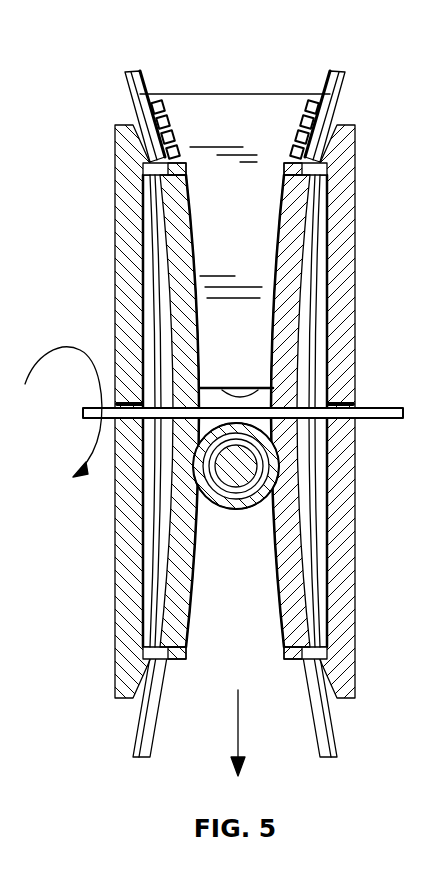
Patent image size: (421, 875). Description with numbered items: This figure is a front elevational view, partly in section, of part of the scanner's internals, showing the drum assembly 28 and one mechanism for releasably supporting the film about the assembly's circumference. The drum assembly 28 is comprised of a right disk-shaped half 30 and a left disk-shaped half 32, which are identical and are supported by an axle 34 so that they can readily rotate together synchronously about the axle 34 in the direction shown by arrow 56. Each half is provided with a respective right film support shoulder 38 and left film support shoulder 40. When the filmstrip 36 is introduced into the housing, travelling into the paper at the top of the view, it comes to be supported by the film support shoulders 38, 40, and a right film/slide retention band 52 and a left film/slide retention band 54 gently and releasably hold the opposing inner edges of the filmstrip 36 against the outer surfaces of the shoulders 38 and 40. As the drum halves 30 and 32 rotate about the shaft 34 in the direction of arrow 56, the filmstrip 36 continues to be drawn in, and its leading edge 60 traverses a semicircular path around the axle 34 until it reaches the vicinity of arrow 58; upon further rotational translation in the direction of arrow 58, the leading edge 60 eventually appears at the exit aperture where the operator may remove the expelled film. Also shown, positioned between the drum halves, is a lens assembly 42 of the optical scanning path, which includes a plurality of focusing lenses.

The drum assembly 28 is at (337, 399).
The right disk-shaped half 30 is at (348, 155).
The left disk-shaped half 32 is at (120, 152).
The axle 34 is at (375, 408).
The filmstrip 36 is at (252, 95).
The right film support shoulder 38 is at (297, 160).
The left film support shoulder 40 is at (178, 155).
The lens assembly 42 is at (232, 482).
The right film/slide retention band 52 is at (338, 72).
The left film/slide retention band 54 is at (132, 72).
The arrow 56 is at (92, 467).
The arrow 58 is at (244, 750).
The leading edge 60 is at (258, 384).